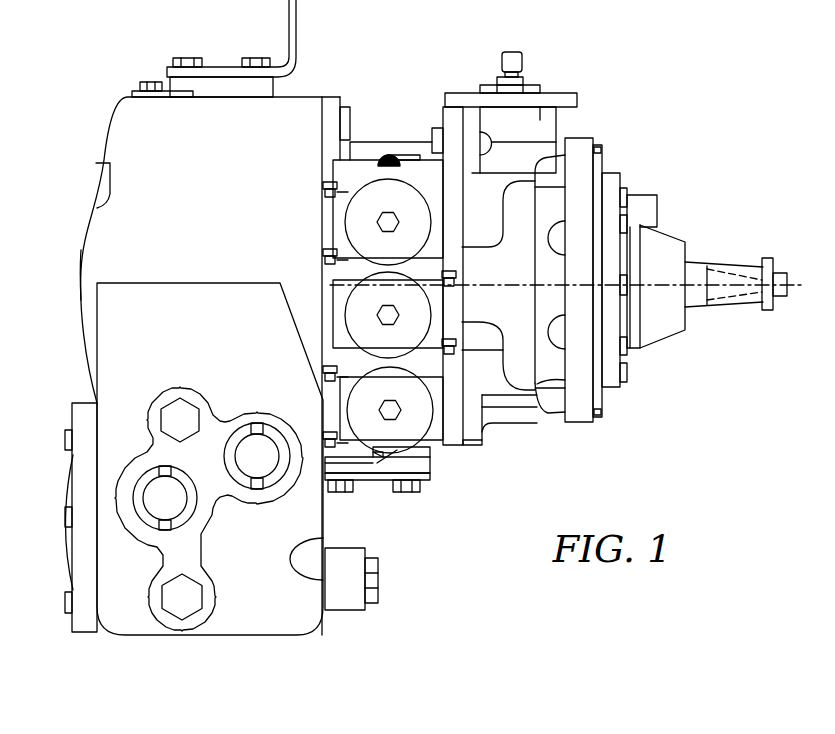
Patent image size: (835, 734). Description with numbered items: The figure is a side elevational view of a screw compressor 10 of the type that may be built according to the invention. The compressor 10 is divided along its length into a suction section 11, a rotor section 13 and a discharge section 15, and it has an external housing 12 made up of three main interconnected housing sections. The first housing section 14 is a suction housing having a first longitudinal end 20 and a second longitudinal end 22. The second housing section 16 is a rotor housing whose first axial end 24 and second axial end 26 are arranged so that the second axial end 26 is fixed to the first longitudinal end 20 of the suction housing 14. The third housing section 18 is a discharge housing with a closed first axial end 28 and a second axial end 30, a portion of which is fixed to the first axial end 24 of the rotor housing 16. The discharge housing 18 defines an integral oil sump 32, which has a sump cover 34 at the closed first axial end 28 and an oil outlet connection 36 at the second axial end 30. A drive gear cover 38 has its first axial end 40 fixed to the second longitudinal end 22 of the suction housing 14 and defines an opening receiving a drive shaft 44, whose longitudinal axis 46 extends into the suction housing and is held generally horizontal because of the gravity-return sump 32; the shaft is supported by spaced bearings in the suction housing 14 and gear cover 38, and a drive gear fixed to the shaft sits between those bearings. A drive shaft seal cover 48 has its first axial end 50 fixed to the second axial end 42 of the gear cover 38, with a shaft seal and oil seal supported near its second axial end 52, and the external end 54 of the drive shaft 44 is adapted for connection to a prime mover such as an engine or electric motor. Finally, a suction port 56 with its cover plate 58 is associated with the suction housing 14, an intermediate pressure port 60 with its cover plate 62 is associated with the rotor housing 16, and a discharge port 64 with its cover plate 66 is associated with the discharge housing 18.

The screw compressor 10 is at (693, 389).
The suction section 11 is at (544, 75).
The external housing 12 is at (463, 466).
The rotor section 13 is at (366, 134).
The first housing section 14 is at (548, 155).
The discharge section 15 is at (210, 57).
The second housing section 16 is at (416, 146).
The third housing section 18 is at (118, 148).
The first longitudinal end 20 is at (457, 203).
The second longitudinal end 22 is at (601, 158).
The first axial end 24 is at (318, 128).
The second axial end 26 is at (481, 443).
The closed first axial end 28 is at (80, 253).
The second axial end 30 is at (325, 218).
The integral oil sump 32 is at (255, 627).
The sump cover 34 is at (82, 408).
The oil outlet connection 36 is at (379, 582).
The drive gear cover 38 is at (578, 421).
The first axial end 40 is at (563, 405).
The second axial end 42 is at (608, 172).
The drive shaft 44 is at (729, 296).
The longitudinal axis 46 is at (792, 291).
The drive shaft seal cover 48 is at (661, 245).
The first axial end 50 is at (594, 388).
The second axial end 52 is at (689, 253).
The external end 54 is at (786, 275).
The suction port 56 is at (550, 150).
The cover plate 58 is at (455, 96).
The intermediate pressure port 60 is at (413, 466).
The cover plate 62 is at (378, 479).
The discharge port 64 is at (275, 87).
The cover plate 66 is at (172, 72).